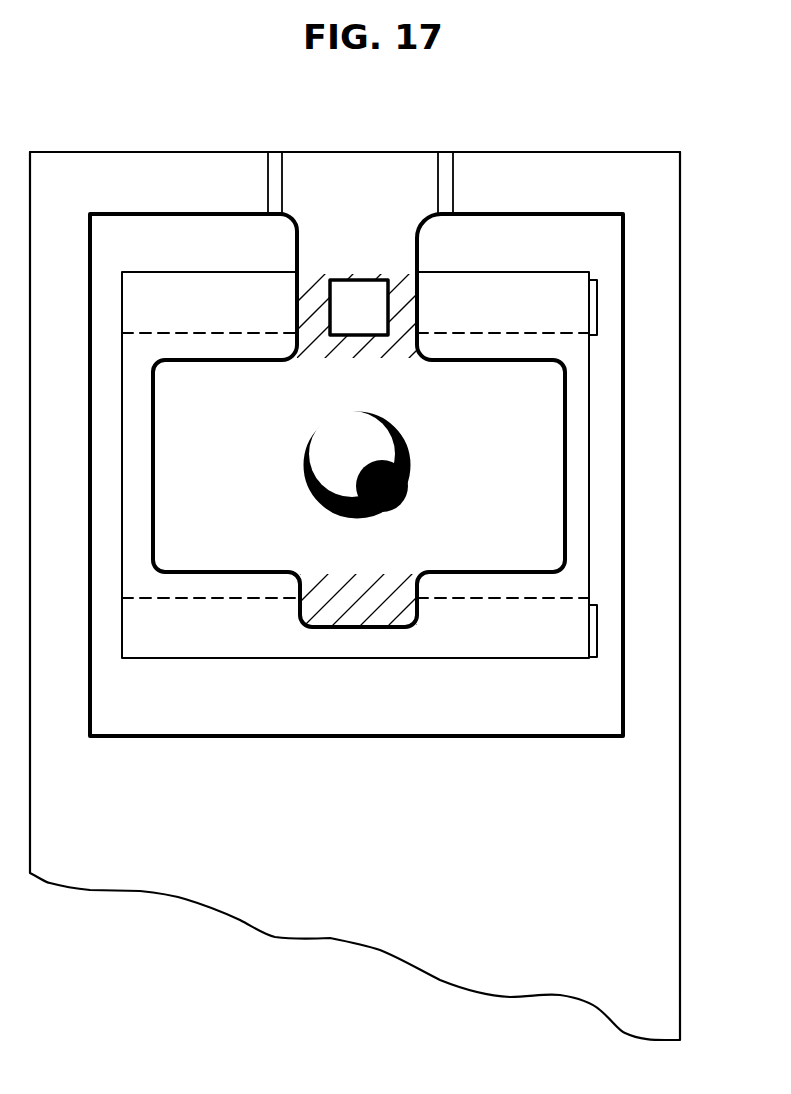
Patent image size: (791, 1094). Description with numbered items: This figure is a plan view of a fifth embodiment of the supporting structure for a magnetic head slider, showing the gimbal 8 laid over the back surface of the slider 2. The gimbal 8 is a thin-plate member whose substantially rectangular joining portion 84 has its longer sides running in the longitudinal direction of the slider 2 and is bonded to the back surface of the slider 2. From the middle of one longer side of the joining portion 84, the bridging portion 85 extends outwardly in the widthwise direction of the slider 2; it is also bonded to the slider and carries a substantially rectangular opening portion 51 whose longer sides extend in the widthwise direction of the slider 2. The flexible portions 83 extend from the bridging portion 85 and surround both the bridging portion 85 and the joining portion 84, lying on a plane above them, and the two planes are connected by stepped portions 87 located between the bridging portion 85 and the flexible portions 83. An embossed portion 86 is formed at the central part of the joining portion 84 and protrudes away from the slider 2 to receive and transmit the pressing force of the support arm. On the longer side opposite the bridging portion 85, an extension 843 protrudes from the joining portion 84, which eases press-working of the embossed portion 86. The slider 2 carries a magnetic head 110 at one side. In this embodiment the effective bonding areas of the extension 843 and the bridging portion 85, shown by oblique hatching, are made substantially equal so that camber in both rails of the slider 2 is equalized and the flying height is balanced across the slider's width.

The slider 2 is at (135, 545).
The gimbal 8 is at (664, 806).
The flexible portions 83 is at (567, 153).
The joining portion 84 is at (210, 360).
The extension 843 is at (380, 614).
The bridging portion 85 is at (420, 253).
The embossed portion 86 is at (330, 432).
The stepped portions 87 is at (283, 172).
The opening portion 51 is at (367, 291).
The magnetic head 110 is at (597, 305).